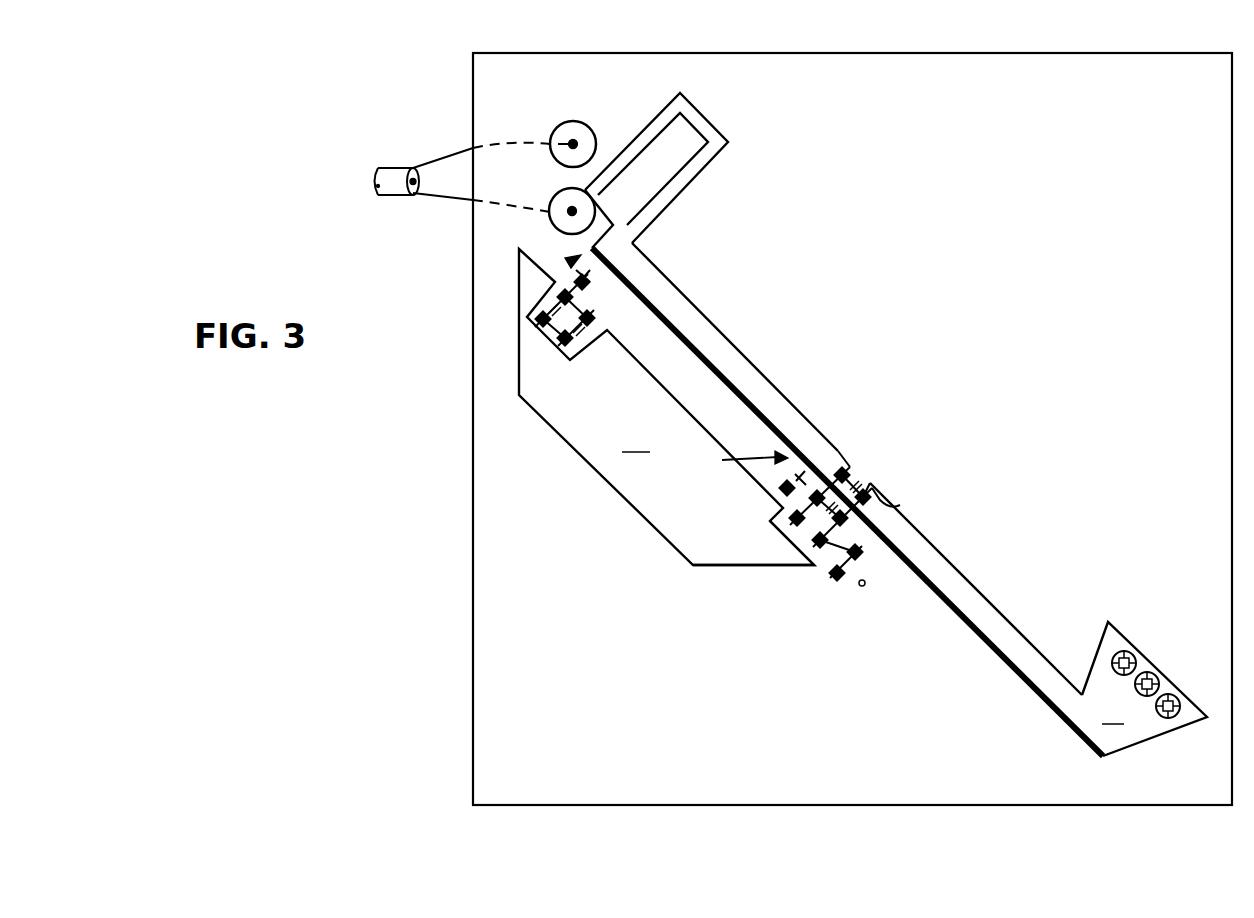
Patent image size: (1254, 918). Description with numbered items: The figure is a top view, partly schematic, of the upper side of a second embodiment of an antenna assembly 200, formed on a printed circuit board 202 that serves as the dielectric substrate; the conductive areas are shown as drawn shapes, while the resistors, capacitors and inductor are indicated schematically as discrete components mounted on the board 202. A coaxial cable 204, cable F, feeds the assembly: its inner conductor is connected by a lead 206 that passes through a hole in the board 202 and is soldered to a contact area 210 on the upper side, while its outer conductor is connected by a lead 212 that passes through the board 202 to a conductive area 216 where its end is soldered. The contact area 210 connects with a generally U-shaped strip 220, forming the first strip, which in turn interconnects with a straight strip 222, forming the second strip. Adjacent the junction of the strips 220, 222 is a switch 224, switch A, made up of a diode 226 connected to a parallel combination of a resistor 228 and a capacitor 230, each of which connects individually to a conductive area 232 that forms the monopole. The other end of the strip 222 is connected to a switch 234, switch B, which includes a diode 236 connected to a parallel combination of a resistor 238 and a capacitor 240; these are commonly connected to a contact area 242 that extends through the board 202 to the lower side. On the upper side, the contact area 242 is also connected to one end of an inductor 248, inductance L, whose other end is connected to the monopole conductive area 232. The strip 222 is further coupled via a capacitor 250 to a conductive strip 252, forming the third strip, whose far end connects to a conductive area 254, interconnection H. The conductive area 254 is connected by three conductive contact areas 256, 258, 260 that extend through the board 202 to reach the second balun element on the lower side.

The antenna assembly 200 is at (597, 836).
The printed circuit board 202 is at (473, 72).
The coaxial cable 204 is at (400, 196).
The lead 206 is at (476, 200).
The contact area 210 is at (549, 216).
The lead 212 is at (474, 148).
The conductive area 216 is at (587, 122).
The U-shaped strip 220 is at (715, 140).
The straight strip 222 is at (745, 355).
The switch 224 is at (574, 258).
The diode 226 is at (617, 278).
The resistor 228 is at (573, 348).
The capacitor 230 is at (537, 303).
The conductive area 232 is at (604, 478).
The switch 234 is at (735, 460).
The diode 236 is at (766, 501).
The resistor 238 is at (785, 563).
The capacitor 240 is at (885, 500).
The contact area 242 is at (888, 530).
The inductor 248 is at (860, 592).
The capacitor 250 is at (858, 480).
The conductive strip 252 is at (975, 590).
The conductive area 254 is at (1118, 754).
The conductive contact area 256 is at (1124, 651).
The conductive contact area 258 is at (1158, 674).
The conductive contact area 260 is at (1168, 720).